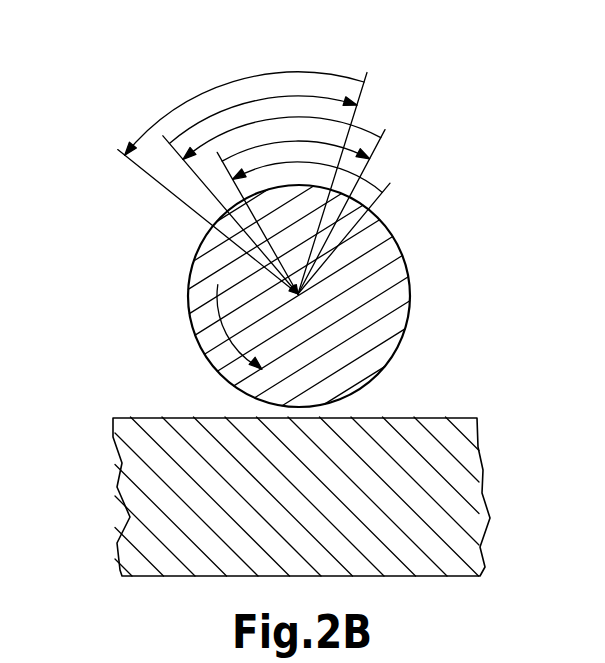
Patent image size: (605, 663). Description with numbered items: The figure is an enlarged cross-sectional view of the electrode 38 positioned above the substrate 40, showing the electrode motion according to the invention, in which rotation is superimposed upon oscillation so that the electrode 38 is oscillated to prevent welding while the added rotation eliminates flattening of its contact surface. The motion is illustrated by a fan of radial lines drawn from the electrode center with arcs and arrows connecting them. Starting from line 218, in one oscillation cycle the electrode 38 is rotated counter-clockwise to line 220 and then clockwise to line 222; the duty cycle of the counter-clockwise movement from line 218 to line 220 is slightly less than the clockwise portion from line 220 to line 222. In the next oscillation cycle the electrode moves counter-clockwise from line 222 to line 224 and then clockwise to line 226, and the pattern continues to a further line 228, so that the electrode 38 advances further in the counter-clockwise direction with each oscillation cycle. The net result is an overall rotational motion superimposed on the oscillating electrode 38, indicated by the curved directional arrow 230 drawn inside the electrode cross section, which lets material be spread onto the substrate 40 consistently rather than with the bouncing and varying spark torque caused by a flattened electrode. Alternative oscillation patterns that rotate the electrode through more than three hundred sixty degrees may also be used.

The electrode 38 is at (410, 310).
The substrate 40 is at (482, 496).
The line 218 is at (390, 203).
The line 220 is at (232, 165).
The line 222 is at (383, 145).
The line 224 is at (188, 165).
The line 226 is at (366, 82).
The beam angle 228 is at (131, 152).
The directional arrow 230 is at (199, 347).